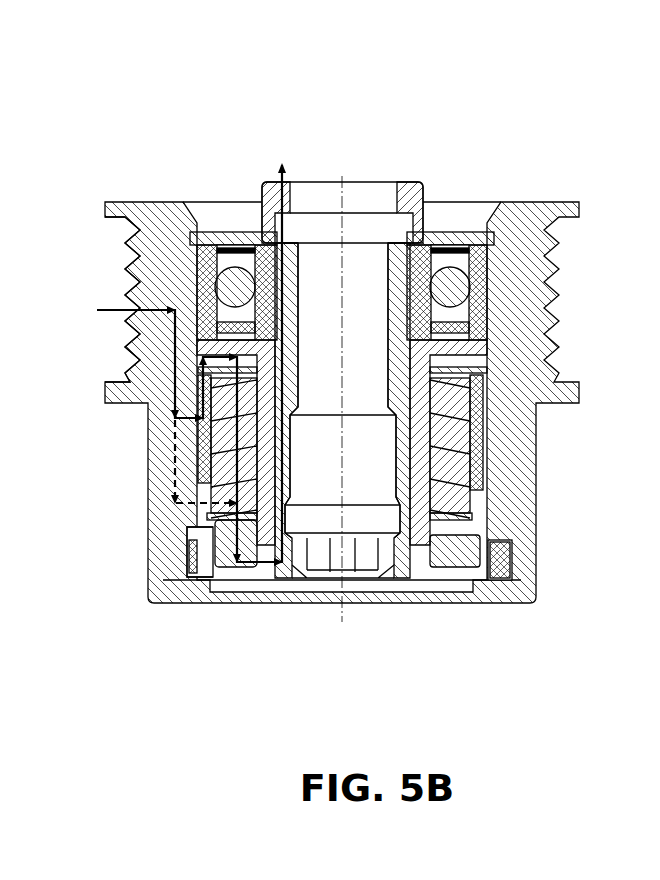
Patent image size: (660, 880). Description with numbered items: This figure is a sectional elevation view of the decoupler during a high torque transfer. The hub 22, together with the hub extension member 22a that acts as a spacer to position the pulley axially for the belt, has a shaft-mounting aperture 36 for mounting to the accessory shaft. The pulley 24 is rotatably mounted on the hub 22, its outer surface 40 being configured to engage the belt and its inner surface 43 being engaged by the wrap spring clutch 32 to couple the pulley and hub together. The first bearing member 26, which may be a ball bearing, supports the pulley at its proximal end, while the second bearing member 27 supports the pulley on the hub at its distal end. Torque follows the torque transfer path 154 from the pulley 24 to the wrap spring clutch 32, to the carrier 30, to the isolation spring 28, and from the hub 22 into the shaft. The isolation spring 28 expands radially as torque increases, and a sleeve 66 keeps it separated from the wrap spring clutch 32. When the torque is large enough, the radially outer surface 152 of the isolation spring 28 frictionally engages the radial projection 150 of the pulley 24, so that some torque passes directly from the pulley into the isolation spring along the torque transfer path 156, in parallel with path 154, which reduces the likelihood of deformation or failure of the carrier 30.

The hub 22 is at (412, 557).
The hub extension member 22a is at (415, 180).
The pulley 24 is at (152, 200).
The first bearing member 26 is at (477, 257).
The second bearing member 27 is at (498, 553).
The isolation spring 28 is at (443, 553).
The carrier 30 is at (453, 357).
The wrap spring clutch 32 is at (483, 425).
The shaft-mounting aperture 36 is at (322, 200).
The outer surface 40 is at (127, 243).
The inner surface 43 is at (487, 400).
The sleeve 66 is at (473, 453).
The radial projection 150 is at (205, 522).
The radially outer surface 152 is at (470, 517).
The torque transfer path 154 is at (110, 310).
The torque transfer path 156 is at (173, 458).